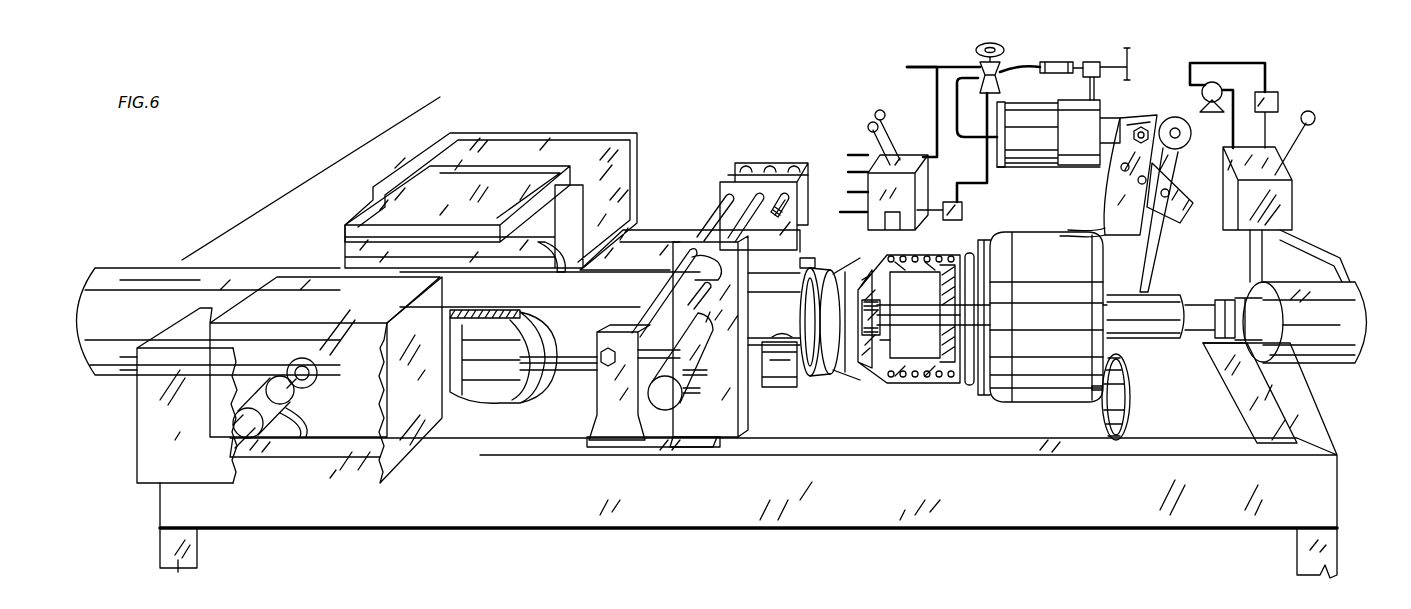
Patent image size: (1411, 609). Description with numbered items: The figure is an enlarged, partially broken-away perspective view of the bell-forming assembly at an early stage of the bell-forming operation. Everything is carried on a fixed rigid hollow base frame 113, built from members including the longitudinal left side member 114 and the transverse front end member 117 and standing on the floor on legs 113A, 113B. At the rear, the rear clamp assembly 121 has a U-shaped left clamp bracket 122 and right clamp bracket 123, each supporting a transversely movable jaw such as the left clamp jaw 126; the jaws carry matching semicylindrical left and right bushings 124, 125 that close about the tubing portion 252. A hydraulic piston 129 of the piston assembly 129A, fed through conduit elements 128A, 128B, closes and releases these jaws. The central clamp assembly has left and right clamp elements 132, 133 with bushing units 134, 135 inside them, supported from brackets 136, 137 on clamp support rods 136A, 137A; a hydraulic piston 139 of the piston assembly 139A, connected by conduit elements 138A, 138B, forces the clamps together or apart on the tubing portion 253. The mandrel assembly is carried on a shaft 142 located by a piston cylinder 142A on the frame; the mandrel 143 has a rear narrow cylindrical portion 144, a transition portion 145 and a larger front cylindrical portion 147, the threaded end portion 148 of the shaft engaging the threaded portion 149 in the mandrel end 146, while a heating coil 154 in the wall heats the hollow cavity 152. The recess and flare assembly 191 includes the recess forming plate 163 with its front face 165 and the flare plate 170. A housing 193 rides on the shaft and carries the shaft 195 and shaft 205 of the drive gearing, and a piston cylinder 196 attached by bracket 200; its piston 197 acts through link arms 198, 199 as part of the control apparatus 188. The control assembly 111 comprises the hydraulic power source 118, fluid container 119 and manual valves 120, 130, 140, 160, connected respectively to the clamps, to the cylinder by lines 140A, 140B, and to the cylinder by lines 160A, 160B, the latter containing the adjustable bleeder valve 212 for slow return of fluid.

The bell-former control assembly 111 is at (917, 131).
The base frame 113 is at (893, 515).
The leg 113A is at (185, 556).
The leg 113B is at (1287, 565).
The left side member 114 is at (690, 250).
The front end member 117 is at (1285, 425).
The high-pressure hydraulic fluid power source 118 is at (927, 66).
The hydraulic fluid container 119 is at (963, 210).
The control valve 120 is at (871, 122).
The rear clamp assembly 121 is at (252, 212).
The left clamp bracket 122 is at (465, 143).
The right clamp bracket 123 is at (105, 300).
The left bushing 124 is at (541, 262).
The right bushing 125 is at (525, 338).
The left clamp jaw 126 is at (473, 243).
The hydraulic conduit element 128A is at (268, 445).
The hydraulic conduit element 128B is at (302, 437).
The hydraulic piston 129 is at (305, 388).
The hydraulic piston assembly 129A is at (265, 380).
The control valve 130 is at (881, 108).
The left clamp element 132 is at (738, 195).
The right clamp element 133 is at (709, 341).
The left bushing unit 134 is at (812, 264).
The right bushing unit 135 is at (801, 400).
The bracket 136 is at (740, 172).
The clamp support rod 136A is at (656, 312).
The bracket 137 is at (600, 430).
The clamp support rod 137A is at (733, 230).
The conduit element 138A is at (725, 420).
The conduit element 138B is at (697, 384).
The hydraulic piston 139 is at (680, 340).
The hydraulic piston assembly 139A is at (667, 404).
The control valve 140 is at (1316, 186).
The hydraulic line 140A is at (1268, 240).
The hydraulic line 140B is at (1336, 262).
The shaft 142 is at (902, 313).
The piston cylinder 142A is at (1305, 322).
The mandrel 143 is at (968, 413).
The rear narrow cylindrical portion 144 is at (863, 385).
The transition portion 145 is at (900, 388).
The end portion 146 is at (850, 368).
The front cylindrical mandrel portion 147 is at (938, 385).
The threaded end portion 148 is at (897, 310).
The threaded portion 149 is at (894, 350).
The cavity 152 is at (922, 313).
The heating coil 154 is at (903, 262).
The control valve 160 is at (1000, 62).
The hydraulic line 160A is at (951, 65).
The hydraulic line 160B is at (1015, 72).
The recess forming plate 163 is at (967, 318).
The front face 165 is at (988, 290).
The flare plate 170 is at (988, 351).
The control assembly apparatus 188 is at (1072, 174).
The recess and flare assembly 191 is at (1095, 330).
The housing 193 is at (1046, 246).
The shaft 195 is at (1120, 390).
The piston cylinder 196 is at (1058, 133).
The hydraulic piston 197 is at (1150, 120).
The link arm 198 is at (1150, 262).
The link arm 199 is at (1180, 325).
The bracket 200 is at (1100, 222).
The shaft 205 is at (1125, 418).
The adjustable bleeder valve 212 is at (1093, 46).
The tubing portion 252 is at (158, 263).
The tubing portion 253 is at (774, 309).